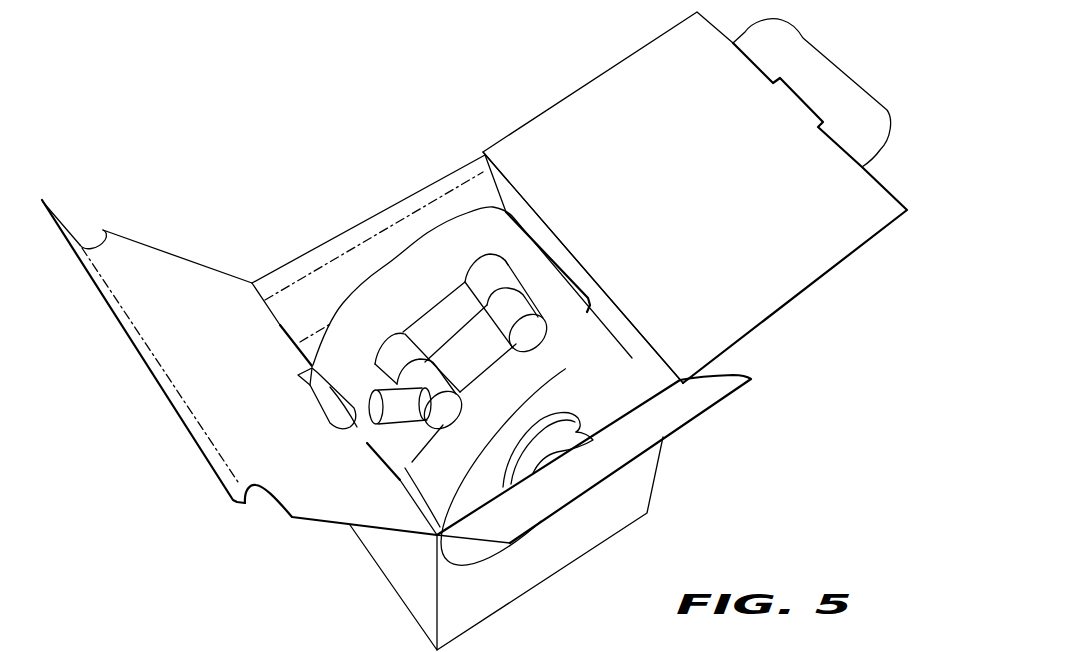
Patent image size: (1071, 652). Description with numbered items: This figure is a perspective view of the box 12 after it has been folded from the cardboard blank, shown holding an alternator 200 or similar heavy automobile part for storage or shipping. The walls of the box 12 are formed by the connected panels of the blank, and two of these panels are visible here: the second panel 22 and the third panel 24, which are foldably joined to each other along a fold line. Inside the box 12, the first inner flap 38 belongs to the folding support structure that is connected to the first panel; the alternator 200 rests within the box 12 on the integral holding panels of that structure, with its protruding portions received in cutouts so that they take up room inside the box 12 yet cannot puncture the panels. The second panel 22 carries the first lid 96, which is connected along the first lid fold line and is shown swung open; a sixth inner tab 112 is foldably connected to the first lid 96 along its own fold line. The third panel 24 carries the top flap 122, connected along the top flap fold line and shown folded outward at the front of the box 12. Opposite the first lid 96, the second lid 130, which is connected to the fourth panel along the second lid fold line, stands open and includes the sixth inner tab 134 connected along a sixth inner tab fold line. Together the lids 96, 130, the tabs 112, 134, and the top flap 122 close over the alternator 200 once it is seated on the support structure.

The box 12 is at (276, 100).
The second panel 22 is at (419, 572).
The third panel 24 is at (557, 556).
The first inner flap 38 is at (336, 309).
The first lid 96 is at (246, 387).
The sixth inner tab 112 is at (100, 288).
The top flap 122 is at (660, 428).
The second lid 130 is at (709, 199).
The sixth inner tab 134 is at (803, 59).
The alternator 200 is at (395, 300).